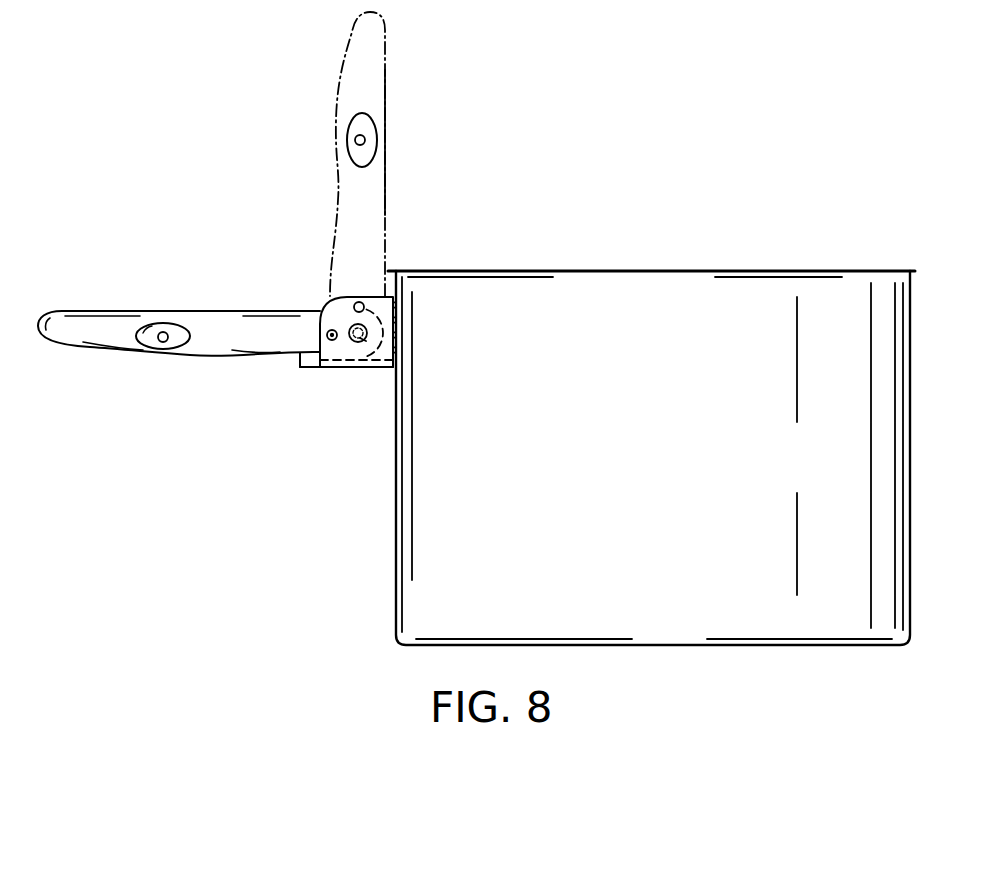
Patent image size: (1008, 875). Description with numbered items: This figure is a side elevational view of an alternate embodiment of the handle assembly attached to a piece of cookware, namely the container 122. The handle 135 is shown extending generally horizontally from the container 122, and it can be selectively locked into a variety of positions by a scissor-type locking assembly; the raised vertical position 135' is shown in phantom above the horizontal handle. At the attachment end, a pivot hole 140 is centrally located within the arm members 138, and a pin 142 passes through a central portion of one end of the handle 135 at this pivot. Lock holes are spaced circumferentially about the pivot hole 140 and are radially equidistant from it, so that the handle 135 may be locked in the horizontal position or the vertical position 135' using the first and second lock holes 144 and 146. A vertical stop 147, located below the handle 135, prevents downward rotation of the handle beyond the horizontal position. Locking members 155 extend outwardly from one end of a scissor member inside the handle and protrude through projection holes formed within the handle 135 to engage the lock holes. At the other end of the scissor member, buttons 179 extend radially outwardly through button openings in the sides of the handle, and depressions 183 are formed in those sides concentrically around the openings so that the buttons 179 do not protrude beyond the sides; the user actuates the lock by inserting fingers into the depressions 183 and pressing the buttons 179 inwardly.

The container 122 is at (643, 269).
The handle 135 is at (179, 287).
The vertical position 135' is at (416, 154).
The arm members 138 is at (343, 301).
The pivot hole 140 is at (368, 333).
The pin 142 is at (366, 338).
The first lock hole 144 is at (326, 340).
The second lock hole 146 is at (363, 303).
The vertical stop 147 is at (310, 369).
The locking members 155 is at (335, 340).
The buttons 179 is at (164, 343).
The depressions 183 is at (176, 331).